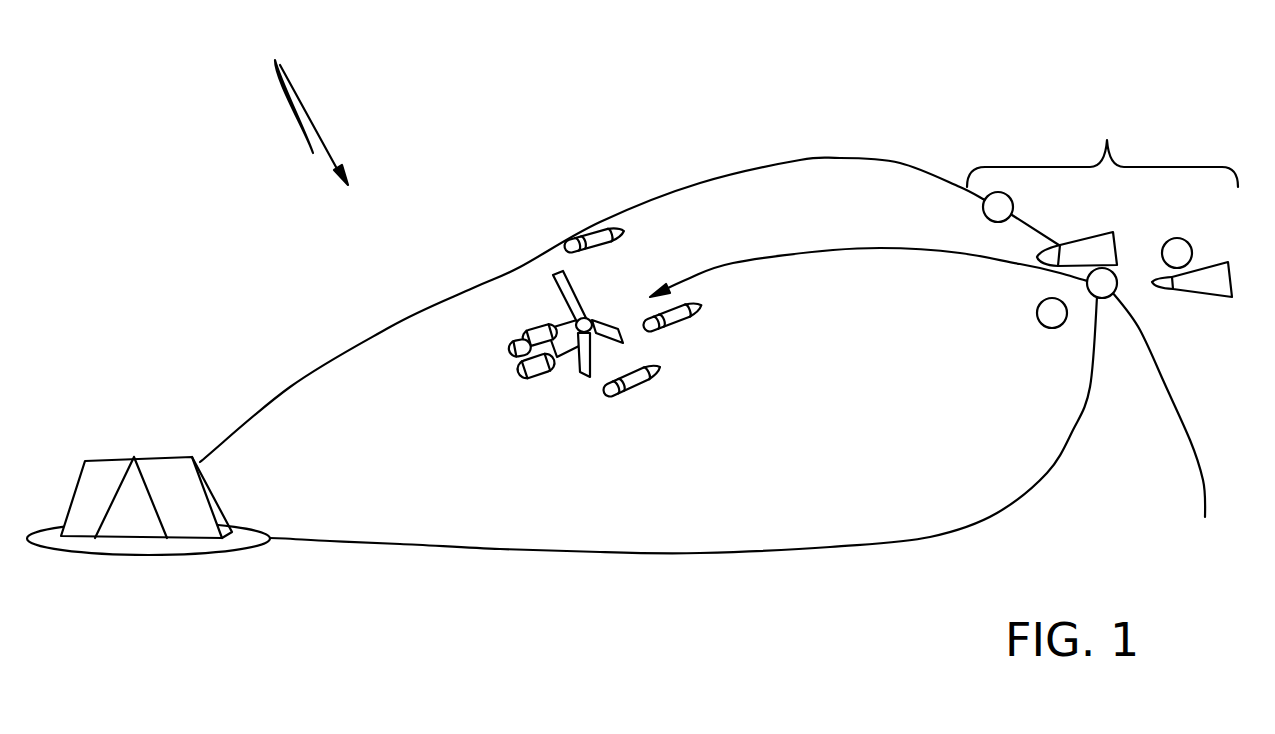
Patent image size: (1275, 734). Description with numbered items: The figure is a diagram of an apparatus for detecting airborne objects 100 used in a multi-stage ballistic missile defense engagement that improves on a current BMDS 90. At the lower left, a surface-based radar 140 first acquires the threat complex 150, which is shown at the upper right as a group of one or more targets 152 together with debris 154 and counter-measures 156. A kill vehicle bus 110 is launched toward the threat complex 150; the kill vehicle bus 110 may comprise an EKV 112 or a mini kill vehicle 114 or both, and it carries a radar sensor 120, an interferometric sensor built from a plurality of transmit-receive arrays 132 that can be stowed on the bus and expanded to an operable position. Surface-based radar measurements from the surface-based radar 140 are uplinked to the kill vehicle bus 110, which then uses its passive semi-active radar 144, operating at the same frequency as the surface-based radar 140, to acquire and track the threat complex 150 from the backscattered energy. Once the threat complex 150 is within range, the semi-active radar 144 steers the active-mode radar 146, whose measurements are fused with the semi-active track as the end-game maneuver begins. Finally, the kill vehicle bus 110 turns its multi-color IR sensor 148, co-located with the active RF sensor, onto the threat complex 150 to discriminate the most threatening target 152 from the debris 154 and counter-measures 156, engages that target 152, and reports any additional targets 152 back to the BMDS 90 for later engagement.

The BMDS 90 is at (476, 76).
The apparatus for detecting airborne objects 100 is at (311, 152).
The kill vehicle bus 110 is at (552, 328).
The EKV 112 is at (543, 408).
The mini kill vehicle 114 is at (637, 390).
The radar sensor 120 is at (550, 220).
The transmit-receive array 132 is at (624, 342).
The surface-based radar 140 is at (128, 458).
The semi-active radar 144 is at (640, 177).
The active-mode radar 146 is at (583, 402).
The multi-color IR sensor 148 is at (628, 272).
The threat complex 150 is at (1107, 140).
The target 152 is at (1117, 238).
The debris 154 is at (1113, 293).
The counter-measures 156 is at (1048, 328).